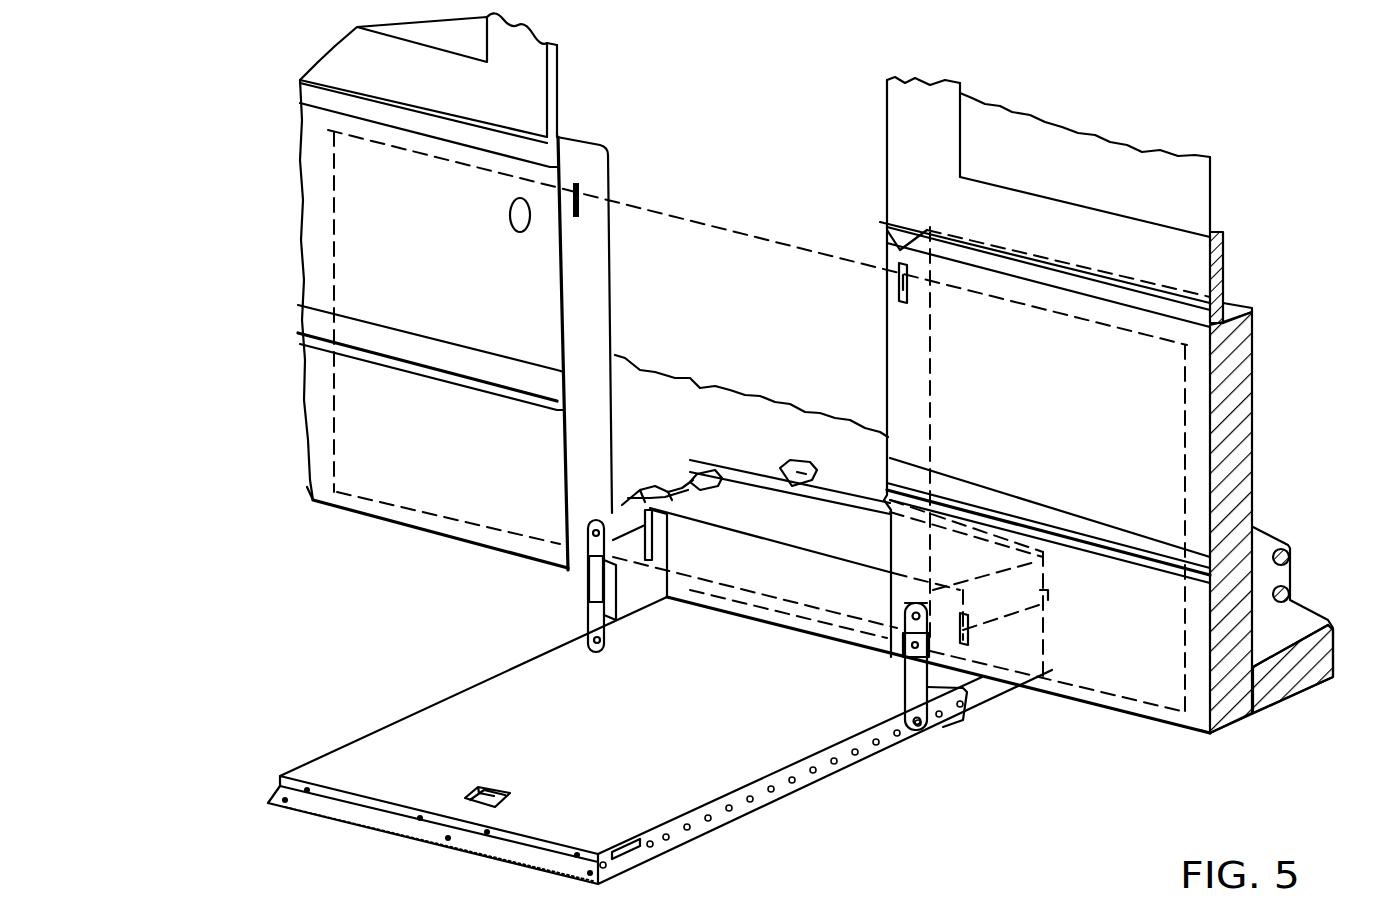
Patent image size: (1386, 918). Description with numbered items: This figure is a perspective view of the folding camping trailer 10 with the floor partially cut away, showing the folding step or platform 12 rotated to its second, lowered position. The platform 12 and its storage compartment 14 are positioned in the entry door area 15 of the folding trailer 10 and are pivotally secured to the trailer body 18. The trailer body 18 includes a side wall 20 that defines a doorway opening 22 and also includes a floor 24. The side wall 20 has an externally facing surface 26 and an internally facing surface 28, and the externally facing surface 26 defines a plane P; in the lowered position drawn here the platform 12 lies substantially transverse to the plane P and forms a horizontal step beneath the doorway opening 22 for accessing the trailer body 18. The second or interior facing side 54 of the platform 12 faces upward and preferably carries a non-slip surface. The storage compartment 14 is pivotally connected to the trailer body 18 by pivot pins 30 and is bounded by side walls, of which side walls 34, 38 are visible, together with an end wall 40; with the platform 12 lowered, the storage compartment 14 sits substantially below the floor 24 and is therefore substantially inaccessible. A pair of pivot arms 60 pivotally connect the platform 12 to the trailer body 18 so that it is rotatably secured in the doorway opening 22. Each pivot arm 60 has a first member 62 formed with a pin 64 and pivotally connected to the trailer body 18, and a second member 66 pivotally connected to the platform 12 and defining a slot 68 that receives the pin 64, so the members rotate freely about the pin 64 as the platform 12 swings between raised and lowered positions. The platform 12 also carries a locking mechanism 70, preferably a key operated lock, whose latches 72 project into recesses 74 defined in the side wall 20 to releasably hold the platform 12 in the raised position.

The folding camping trailer 10 is at (1045, 367).
The folding step or platform 12 is at (653, 740).
The storage compartment 14 is at (911, 569).
The entry door area 15 is at (550, 429).
The trailer body 18 is at (1228, 392).
The side wall 20 is at (1240, 440).
The doorway opening 22 is at (682, 337).
The floor 24 is at (1300, 620).
The externally facing surface 26 is at (1029, 424).
The internally facing surface 28 is at (1278, 482).
The pivot pins 30 is at (660, 492).
The side wall 34 is at (992, 651).
The side wall 38 is at (709, 579).
The end wall 40 is at (752, 532).
The second or interior facing side 54 is at (600, 737).
The pivot arms 60 is at (718, 678).
The first member 62 is at (577, 542).
The pin 64 is at (589, 590).
The second member 66 is at (588, 623).
The slot 68 is at (618, 597).
The locking mechanism 70 is at (465, 792).
The latches 72 is at (638, 852).
The recesses 74 is at (576, 184).
The plane P is at (1189, 482).